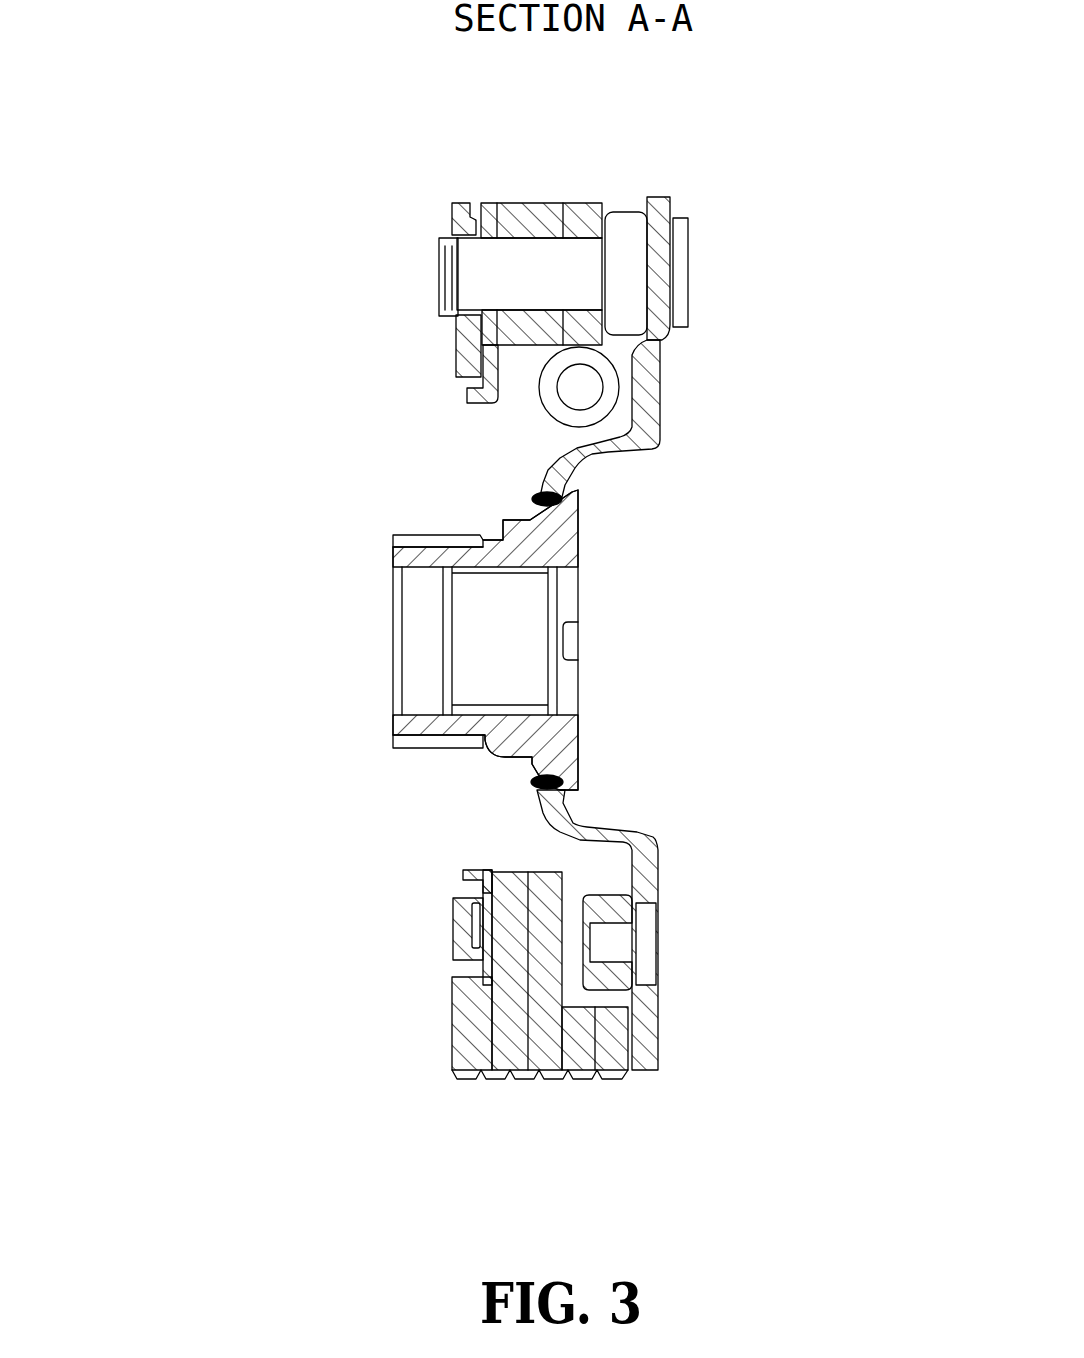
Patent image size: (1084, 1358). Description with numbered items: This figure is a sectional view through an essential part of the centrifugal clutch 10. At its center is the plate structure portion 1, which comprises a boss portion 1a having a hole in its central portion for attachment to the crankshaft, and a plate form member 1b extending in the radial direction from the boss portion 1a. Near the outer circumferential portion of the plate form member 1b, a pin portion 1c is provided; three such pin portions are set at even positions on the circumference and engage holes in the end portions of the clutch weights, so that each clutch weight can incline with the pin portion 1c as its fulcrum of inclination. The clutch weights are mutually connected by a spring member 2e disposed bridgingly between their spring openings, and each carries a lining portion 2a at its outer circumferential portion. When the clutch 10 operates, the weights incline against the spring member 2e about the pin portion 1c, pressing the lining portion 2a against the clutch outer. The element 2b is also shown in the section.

The centrifugal clutch 10 is at (343, 287).
The plate structure portion 1 is at (628, 458).
The boss portion 1a is at (432, 537).
The plate form member 1b is at (660, 435).
The pin portion 1c is at (543, 268).
The lining portion 2a is at (542, 1073).
The upper mounting portion 2b is at (542, 202).
The spring member 2e is at (603, 398).